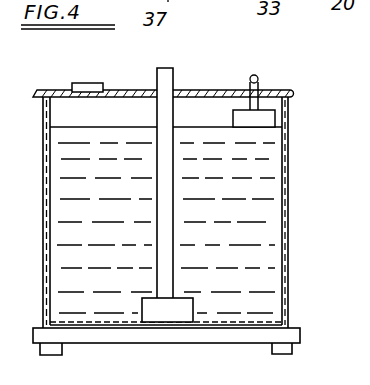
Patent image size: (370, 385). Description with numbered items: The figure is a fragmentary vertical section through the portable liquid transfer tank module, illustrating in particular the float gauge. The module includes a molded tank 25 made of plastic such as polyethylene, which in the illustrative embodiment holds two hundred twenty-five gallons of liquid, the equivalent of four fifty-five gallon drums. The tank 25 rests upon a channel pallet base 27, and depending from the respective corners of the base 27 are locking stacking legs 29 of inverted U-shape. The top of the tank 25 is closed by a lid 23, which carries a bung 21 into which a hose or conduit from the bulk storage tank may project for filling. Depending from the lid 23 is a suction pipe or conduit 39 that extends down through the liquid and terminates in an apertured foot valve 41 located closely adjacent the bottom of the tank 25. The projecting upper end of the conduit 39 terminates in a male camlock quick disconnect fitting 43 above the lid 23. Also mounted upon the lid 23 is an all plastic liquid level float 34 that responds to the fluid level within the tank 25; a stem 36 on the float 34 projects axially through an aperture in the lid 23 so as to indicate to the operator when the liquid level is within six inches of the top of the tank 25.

The bung 21 is at (89, 89).
The lid 23 is at (134, 89).
The molded tank 25 is at (288, 190).
The channel pallet base 27 is at (285, 333).
The locking stacking legs 29 is at (293, 344).
The liquid level float 34 is at (260, 116).
The stem 36 is at (258, 77).
The suction pipe or conduit 39 is at (165, 230).
The apertured foot valve 41 is at (178, 308).
The male camlock quick disconnect fitting 43 is at (174, 73).